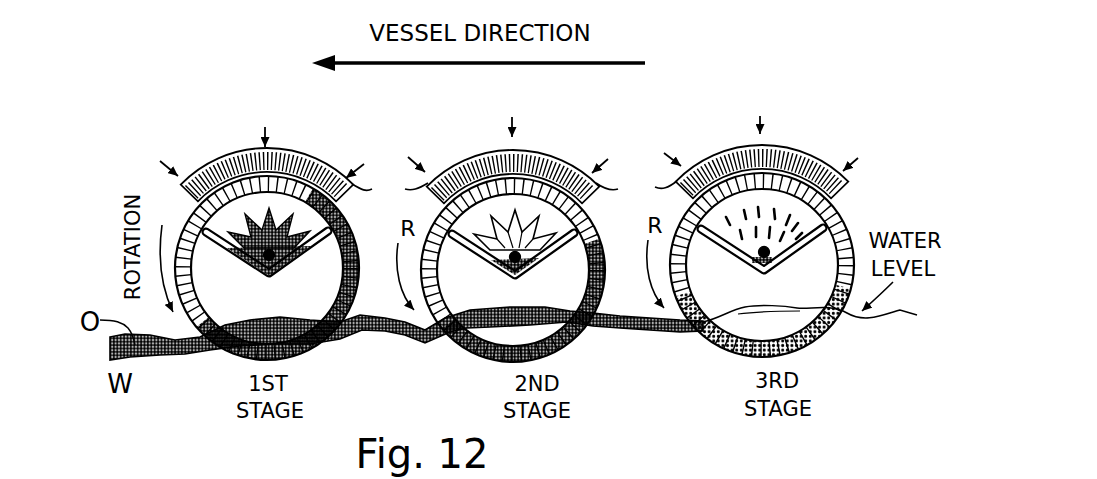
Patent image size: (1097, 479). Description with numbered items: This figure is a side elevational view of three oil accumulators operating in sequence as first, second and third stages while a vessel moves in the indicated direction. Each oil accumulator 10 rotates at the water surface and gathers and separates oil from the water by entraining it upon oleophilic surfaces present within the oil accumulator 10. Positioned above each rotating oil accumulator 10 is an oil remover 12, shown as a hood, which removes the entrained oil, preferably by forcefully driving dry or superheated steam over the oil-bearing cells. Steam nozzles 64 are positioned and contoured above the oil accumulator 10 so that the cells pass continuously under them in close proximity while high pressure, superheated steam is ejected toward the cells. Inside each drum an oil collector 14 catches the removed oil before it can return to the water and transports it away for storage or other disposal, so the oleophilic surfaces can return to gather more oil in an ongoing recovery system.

The oil accumulator 10 is at (359, 252).
The oil remover 12 is at (203, 160).
The oil collector 14 is at (244, 271).
The steam nozzles 64 is at (426, 188).